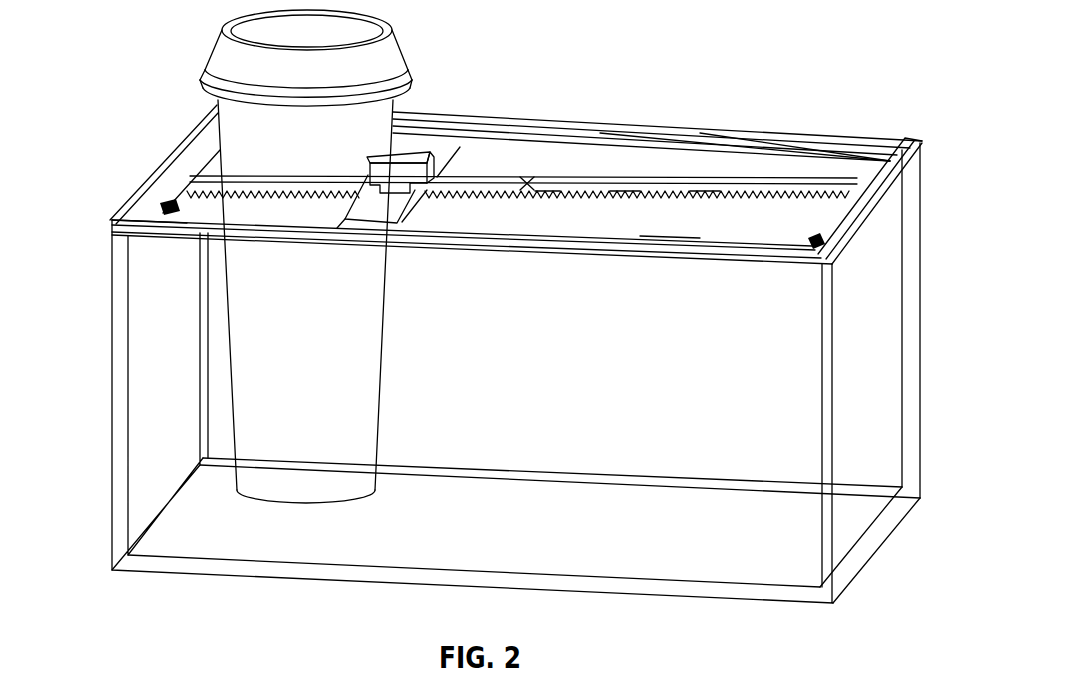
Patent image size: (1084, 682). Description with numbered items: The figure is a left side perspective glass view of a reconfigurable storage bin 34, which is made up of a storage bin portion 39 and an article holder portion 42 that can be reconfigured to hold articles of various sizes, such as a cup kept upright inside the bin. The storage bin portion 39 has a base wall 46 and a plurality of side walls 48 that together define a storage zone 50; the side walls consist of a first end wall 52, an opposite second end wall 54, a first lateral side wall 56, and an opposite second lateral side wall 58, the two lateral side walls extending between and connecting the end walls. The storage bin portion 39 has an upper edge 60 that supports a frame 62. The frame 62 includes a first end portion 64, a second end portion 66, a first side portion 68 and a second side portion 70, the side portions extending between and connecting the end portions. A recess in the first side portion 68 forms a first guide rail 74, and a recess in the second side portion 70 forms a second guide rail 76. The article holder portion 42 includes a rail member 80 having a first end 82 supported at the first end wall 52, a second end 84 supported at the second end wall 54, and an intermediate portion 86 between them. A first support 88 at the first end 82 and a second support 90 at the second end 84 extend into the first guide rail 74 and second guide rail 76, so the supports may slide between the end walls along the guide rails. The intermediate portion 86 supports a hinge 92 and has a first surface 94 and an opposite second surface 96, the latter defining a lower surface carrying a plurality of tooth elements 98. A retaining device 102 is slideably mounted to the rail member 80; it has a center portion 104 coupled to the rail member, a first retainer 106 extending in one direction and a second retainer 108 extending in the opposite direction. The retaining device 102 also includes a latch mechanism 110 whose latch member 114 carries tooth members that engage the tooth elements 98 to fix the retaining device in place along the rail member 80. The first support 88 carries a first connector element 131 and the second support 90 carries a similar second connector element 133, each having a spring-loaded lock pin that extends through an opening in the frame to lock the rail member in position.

The reconfigurable storage bin 34 is at (150, 144).
The storage bin portion 39 is at (855, 527).
The article holder portion 42 is at (588, 146).
The base wall 46 is at (673, 548).
The plurality of side walls 48 is at (110, 288).
The storage zone 50 is at (761, 226).
The first end wall 52 is at (893, 337).
The second end wall 54 is at (110, 400).
The first lateral side wall 56 is at (707, 163).
The second lateral side wall 58 is at (773, 360).
The upper edge 60 is at (882, 213).
The frame 62 is at (800, 125).
The first end portion 64 is at (900, 153).
The second end portion 66 is at (137, 210).
The first side portion 68 is at (483, 122).
The second side portion 70 is at (660, 228).
The first guide rail 74 is at (747, 143).
The second guide rail 76 is at (674, 240).
The rail member 80 is at (794, 208).
The first end 82 is at (823, 183).
The second end 84 is at (183, 165).
The intermediate portion 86 is at (547, 200).
The first support 88 is at (866, 178).
The second support 90 is at (198, 112).
The hinge 92 is at (527, 178).
The first surface 94 is at (623, 182).
The second surface 96 is at (703, 205).
The plurality of tooth elements 98 is at (622, 205).
The retaining device 102 is at (410, 133).
The center portion 104 is at (470, 200).
The first retainer 106 is at (437, 150).
The second retainer 108 is at (400, 245).
The latch mechanism 110 is at (347, 218).
The latch member 114 is at (417, 215).
The first connector element 131 is at (835, 245).
The second connector element 133 is at (167, 202).